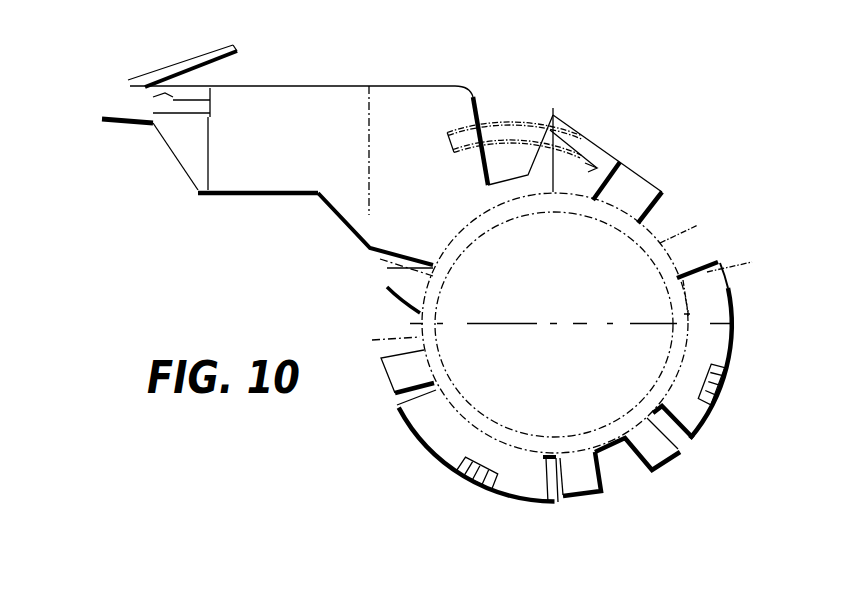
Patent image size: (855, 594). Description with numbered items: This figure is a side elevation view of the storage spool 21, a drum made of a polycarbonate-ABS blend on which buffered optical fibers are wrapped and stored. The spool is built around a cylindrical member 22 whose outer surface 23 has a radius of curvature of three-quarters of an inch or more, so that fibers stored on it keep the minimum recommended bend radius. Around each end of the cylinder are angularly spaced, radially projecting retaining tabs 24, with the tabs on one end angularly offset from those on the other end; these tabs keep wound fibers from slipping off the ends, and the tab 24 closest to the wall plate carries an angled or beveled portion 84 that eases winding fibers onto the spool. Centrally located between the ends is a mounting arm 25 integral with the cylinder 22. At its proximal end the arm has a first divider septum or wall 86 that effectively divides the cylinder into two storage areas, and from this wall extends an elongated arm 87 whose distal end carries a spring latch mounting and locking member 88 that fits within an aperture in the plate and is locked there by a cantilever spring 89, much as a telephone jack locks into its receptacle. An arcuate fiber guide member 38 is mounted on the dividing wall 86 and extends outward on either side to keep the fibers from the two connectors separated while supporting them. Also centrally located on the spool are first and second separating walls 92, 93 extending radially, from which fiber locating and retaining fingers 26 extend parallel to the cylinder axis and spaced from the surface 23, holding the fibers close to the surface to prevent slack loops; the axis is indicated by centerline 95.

The storage spool 21 is at (573, 337).
The cylindrical member 22 is at (690, 313).
The outer surface 23 is at (392, 348).
The retaining tabs 24 is at (640, 172).
The mounting arm 25 is at (320, 215).
The fiber locating and retaining fingers 26 is at (722, 393).
The arcuate fiber guide member 38 is at (500, 123).
The angled or beveled portion 84 is at (385, 288).
The first divider septum or wall 86 is at (427, 97).
The elongated arm 87 is at (308, 93).
The spring latch mounting and locking member 88 is at (102, 102).
The cantilever spring 89 is at (207, 53).
The first separating wall 92 is at (718, 340).
The second separating wall 93 is at (433, 443).
The axis 95 is at (553, 323).